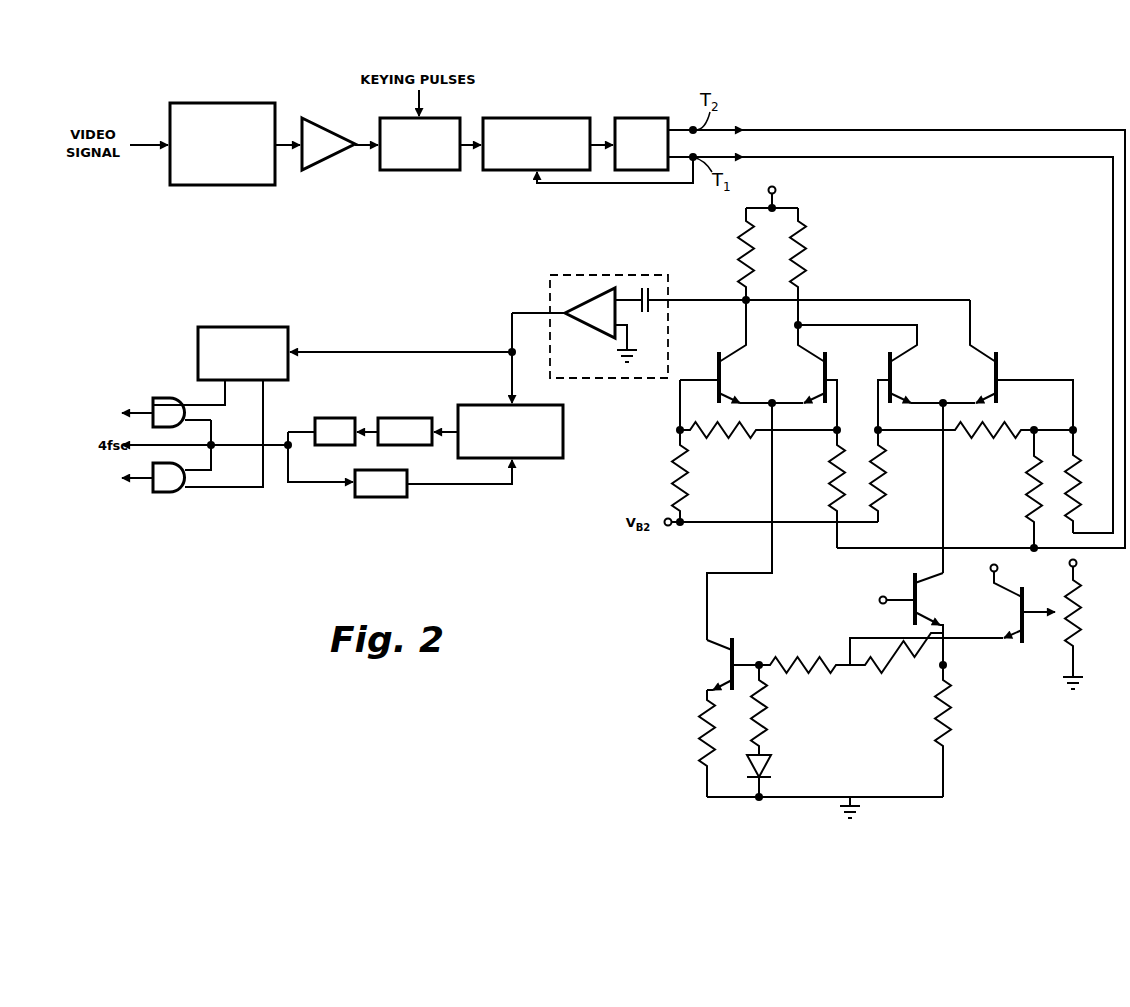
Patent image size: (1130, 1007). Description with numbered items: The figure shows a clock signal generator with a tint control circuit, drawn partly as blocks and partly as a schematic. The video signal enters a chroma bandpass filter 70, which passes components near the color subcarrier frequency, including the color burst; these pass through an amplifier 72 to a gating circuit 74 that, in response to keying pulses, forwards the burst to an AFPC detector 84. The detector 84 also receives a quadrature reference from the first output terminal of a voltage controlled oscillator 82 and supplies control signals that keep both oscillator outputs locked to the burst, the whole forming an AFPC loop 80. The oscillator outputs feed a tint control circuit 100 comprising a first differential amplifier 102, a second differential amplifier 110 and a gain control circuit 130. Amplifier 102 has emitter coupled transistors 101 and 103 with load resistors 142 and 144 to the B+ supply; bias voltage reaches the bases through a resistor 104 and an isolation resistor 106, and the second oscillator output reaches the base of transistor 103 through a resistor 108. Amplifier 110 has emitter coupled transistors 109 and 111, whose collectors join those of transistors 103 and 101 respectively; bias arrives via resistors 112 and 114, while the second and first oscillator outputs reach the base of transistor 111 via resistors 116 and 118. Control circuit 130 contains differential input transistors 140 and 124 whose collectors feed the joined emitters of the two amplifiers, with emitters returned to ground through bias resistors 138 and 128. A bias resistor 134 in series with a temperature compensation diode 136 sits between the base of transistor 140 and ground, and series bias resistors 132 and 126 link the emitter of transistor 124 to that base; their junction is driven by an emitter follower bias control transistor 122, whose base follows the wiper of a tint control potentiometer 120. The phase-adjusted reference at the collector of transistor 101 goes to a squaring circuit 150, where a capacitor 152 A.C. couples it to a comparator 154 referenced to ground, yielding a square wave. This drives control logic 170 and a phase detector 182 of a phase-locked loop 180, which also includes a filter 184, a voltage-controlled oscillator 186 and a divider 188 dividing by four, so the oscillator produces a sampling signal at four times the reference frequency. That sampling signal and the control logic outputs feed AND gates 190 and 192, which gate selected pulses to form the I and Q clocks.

The chroma bandpass filter 70 is at (226, 186).
The amplifier 72 is at (333, 160).
The gating circuit 74 is at (404, 171).
The AFPC loop 80 is at (607, 107).
The voltage controlled oscillator 82 is at (648, 118).
The AFPC detector 84 is at (520, 172).
The tint control circuit 100 is at (934, 262).
The transistor 101 is at (718, 372).
The first differential amplifier 102 is at (784, 369).
The transistor 103 is at (812, 382).
The resistor 104 is at (672, 460).
The isolation resistor 106 is at (710, 443).
The resistor 108 is at (823, 502).
The transistor 109 is at (889, 365).
The second differential amplifier 110 is at (950, 369).
The transistor 111 is at (988, 380).
The resistor 112 is at (892, 492).
The resistor 114 is at (1000, 443).
The resistor 116 is at (1025, 482).
The resistor 118 is at (1078, 458).
The tint control potentiometer 120 is at (1082, 620).
The bias control transistor 122 is at (1018, 618).
The transistor 124 is at (920, 608).
The bias resistor 126 is at (912, 668).
The bias resistor 128 is at (948, 712).
The gain control circuit 130 is at (779, 630).
The bias resistor 132 is at (813, 652).
The bias resistor 134 is at (769, 721).
The temperature compensation diode 136 is at (773, 770).
The bias resistor 138 is at (692, 750).
The transistor 140 is at (724, 665).
The load resistor 142 is at (738, 240).
The load resistor 144 is at (808, 242).
The squaring circuit 150 is at (605, 275).
The capacitor 152 is at (652, 306).
The comparator 154 is at (582, 323).
The control logic 170 is at (253, 325).
The phase-locked loop 180 is at (333, 478).
The phase detector 182 is at (468, 403).
The filter 184 is at (408, 417).
The voltage-controlled oscillator 186 is at (335, 417).
The divider 188 is at (373, 498).
The AND gate 190 is at (162, 398).
The AND gate 192 is at (173, 500).